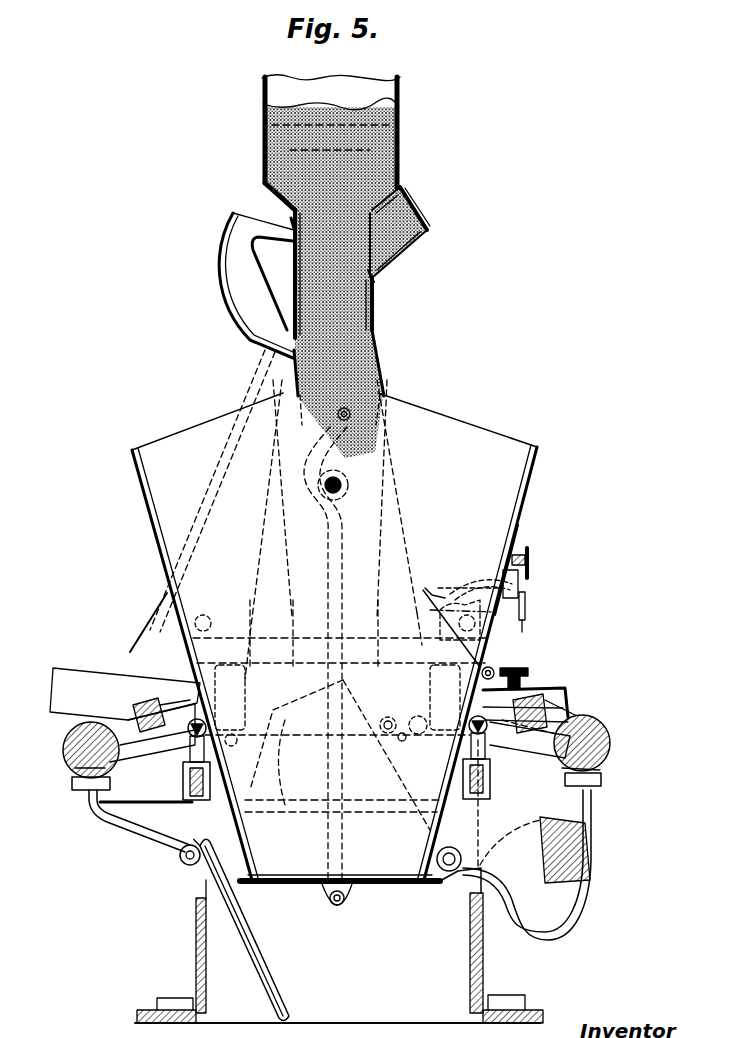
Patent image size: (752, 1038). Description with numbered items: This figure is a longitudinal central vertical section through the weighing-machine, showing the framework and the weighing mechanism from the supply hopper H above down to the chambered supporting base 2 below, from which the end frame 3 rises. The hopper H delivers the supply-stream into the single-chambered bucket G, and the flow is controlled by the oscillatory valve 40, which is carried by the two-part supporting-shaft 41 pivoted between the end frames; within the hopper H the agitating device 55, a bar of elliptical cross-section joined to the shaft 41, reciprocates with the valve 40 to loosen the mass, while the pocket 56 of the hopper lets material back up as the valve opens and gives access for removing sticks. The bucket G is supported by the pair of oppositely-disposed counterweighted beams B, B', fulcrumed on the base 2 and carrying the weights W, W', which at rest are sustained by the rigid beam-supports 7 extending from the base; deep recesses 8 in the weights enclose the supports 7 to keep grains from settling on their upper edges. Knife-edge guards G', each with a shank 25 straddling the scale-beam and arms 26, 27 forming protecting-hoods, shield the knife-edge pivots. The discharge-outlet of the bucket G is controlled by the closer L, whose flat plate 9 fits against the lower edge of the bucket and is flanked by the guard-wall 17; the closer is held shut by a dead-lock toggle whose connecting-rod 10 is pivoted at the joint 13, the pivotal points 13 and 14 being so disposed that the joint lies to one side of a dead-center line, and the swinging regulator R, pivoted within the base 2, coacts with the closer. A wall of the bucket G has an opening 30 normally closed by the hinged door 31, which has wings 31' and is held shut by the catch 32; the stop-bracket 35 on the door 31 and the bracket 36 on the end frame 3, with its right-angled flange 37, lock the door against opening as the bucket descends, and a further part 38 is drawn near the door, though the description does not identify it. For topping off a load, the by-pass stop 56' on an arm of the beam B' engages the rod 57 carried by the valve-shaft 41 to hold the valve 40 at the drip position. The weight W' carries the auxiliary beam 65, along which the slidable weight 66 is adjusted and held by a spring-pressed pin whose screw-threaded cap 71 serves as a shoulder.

The supply hopper H is at (399, 157).
The end frame 3 is at (385, 367).
The agitating device 55 is at (408, 208).
The pocket 56 is at (414, 232).
The two-part supporting-shaft 41 is at (375, 280).
The valve 40 is at (244, 320).
The bucket G is at (324, 630).
The pivotal point 13 is at (338, 420).
The pivotal point 14 is at (327, 491).
The connecting-rod 10 is at (331, 583).
The rod 57 is at (160, 606).
The guard-wall 17 is at (300, 710).
The by-pass stop 56' is at (390, 702).
The opening 30 is at (519, 531).
The spring 38 is at (470, 582).
The wing 31' is at (469, 571).
The catch 32 is at (512, 576).
The stop-bracket 35 is at (520, 580).
The bracket or arm 36 is at (526, 597).
The right-angled flange 37 is at (527, 616).
The door 31 is at (484, 628).
The screw-threaded cap or collar 71 is at (527, 674).
The slidable weight 66 is at (545, 687).
The knife-edge guard G' is at (332, 711).
The shank or body portion 25 is at (548, 706).
The auxiliary beam 65 is at (72, 676).
The counterweighted beam B is at (152, 747).
The counterweighted beam B' is at (530, 752).
The weight W is at (74, 756).
The weight W' is at (598, 750).
The recess 8 is at (70, 767).
The beam-support 7 is at (108, 820).
The arm of knife-edge guard 26 is at (182, 770).
The arm of knife-edge guard 27 is at (490, 738).
The closer L is at (324, 898).
The closer plate 9 is at (382, 884).
The regulator R is at (252, 968).
The supporting base 2 is at (492, 953).